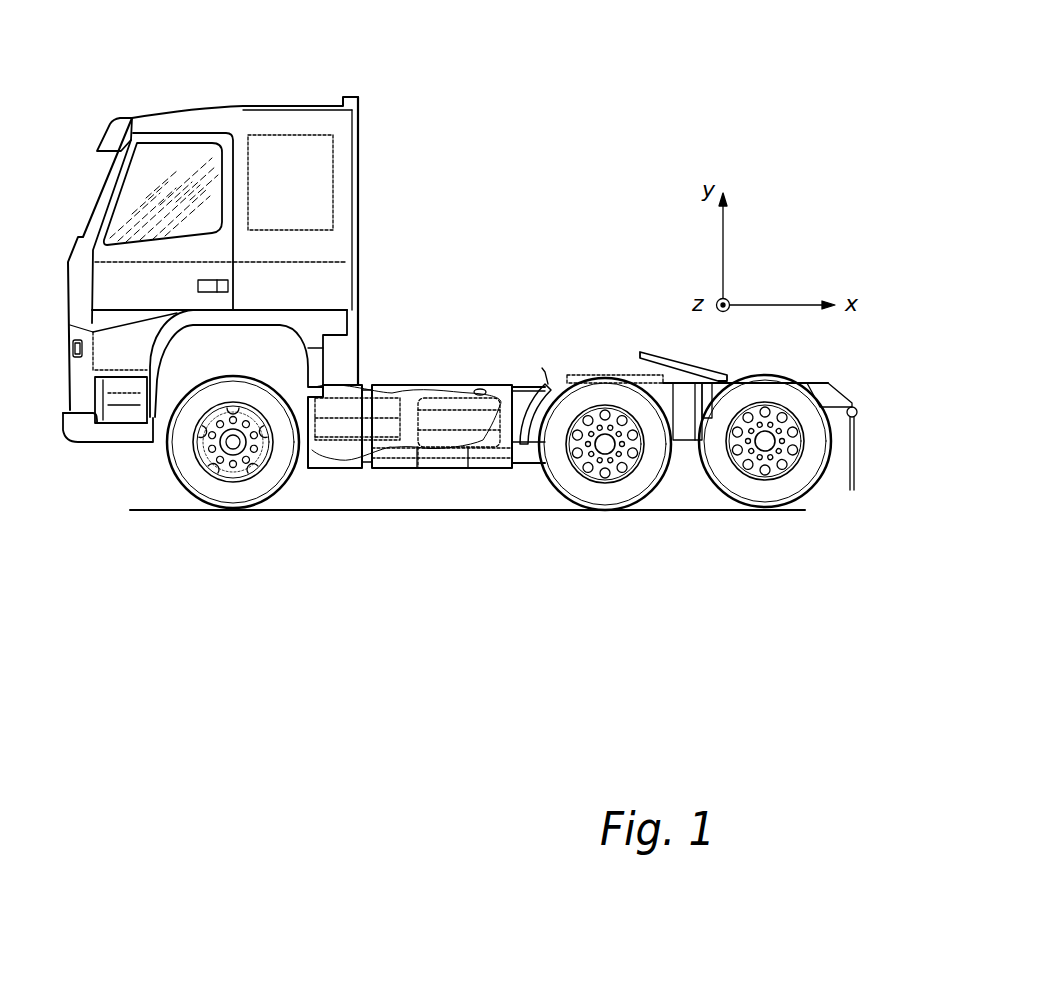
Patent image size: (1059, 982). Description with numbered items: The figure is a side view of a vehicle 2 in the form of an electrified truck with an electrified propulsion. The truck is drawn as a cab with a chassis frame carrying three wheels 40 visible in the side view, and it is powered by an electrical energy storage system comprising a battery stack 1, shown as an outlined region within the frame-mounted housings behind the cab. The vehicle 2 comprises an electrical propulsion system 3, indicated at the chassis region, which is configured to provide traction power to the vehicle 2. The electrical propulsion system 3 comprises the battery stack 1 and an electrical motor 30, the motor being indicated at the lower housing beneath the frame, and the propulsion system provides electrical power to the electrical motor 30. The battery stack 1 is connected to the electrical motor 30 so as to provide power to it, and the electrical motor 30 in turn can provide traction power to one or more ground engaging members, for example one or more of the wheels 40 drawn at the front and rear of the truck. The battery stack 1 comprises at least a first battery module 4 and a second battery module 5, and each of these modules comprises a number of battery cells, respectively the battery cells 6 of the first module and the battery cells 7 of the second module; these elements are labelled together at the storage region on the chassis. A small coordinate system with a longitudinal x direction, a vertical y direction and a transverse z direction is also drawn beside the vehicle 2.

The vehicle 2 is at (552, 104).
The electrical propulsion system 3 is at (370, 371).
The battery stack 1 is at (433, 370).
The first battery module 4 is at (433, 370).
The second battery module 5 is at (433, 370).
The battery cells 6 is at (433, 370).
The battery cells 7 is at (392, 402).
The electrical motor 30 is at (453, 438).
The wheels 40 is at (265, 487).